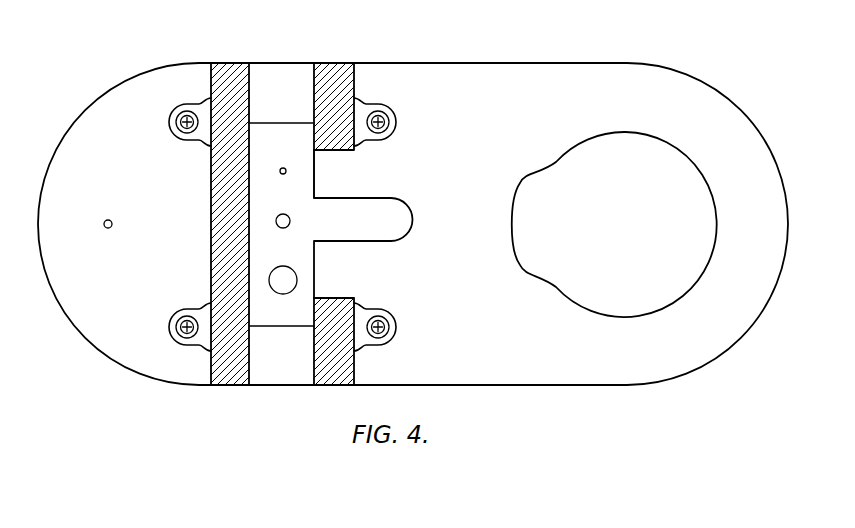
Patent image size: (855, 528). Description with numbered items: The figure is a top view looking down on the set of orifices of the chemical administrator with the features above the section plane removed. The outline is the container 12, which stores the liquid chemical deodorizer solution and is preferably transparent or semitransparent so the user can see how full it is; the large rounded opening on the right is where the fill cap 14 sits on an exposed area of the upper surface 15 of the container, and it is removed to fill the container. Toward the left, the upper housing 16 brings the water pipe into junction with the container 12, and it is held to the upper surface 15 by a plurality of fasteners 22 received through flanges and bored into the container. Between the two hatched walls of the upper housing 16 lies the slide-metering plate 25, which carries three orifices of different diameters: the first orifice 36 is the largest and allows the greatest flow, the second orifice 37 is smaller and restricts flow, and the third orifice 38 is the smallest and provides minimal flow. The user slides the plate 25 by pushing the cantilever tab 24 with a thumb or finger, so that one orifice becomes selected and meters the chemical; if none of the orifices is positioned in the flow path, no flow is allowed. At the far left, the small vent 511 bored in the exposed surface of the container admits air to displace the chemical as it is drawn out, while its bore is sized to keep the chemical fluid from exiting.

The container 12 is at (383, 63).
The fill cap 14 is at (637, 238).
The upper surface 15 is at (575, 63).
The upper housing 16 is at (234, 63).
The fasteners 22 is at (390, 122).
The tab 24 is at (386, 233).
The slide-metering plate 25 is at (305, 177).
The first orifice 36 is at (269, 280).
The second orifice 37 is at (276, 221).
The third orifice 38 is at (280, 174).
The vent 511 is at (104, 224).